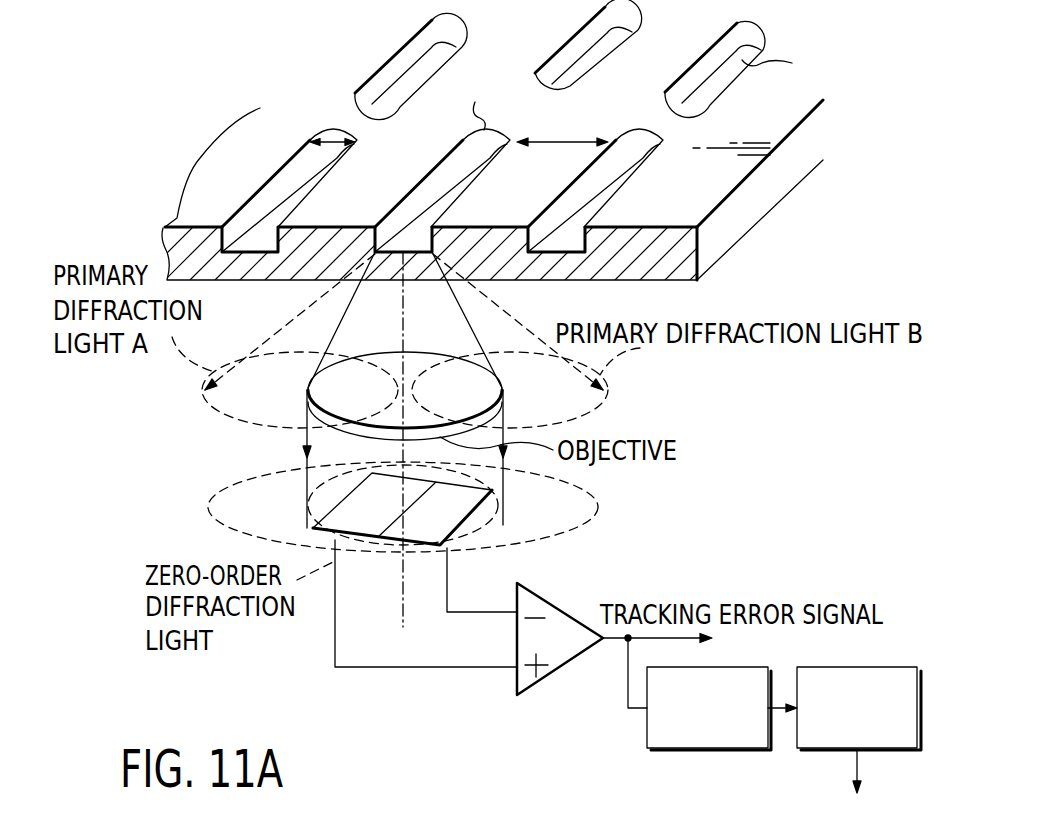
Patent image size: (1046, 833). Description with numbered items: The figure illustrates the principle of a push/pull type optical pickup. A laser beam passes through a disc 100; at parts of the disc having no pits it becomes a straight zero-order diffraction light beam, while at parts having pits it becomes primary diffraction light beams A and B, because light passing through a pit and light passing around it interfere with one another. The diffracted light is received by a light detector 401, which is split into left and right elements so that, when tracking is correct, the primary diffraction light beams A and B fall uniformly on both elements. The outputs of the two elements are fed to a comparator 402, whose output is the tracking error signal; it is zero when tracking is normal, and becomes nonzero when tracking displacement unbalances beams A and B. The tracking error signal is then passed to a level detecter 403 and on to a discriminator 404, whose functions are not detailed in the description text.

The disc 100 is at (730, 230).
The light detector 401 is at (470, 516).
The comparator 402 is at (550, 677).
The level detector 403 is at (655, 752).
The discriminator 404 is at (827, 752).